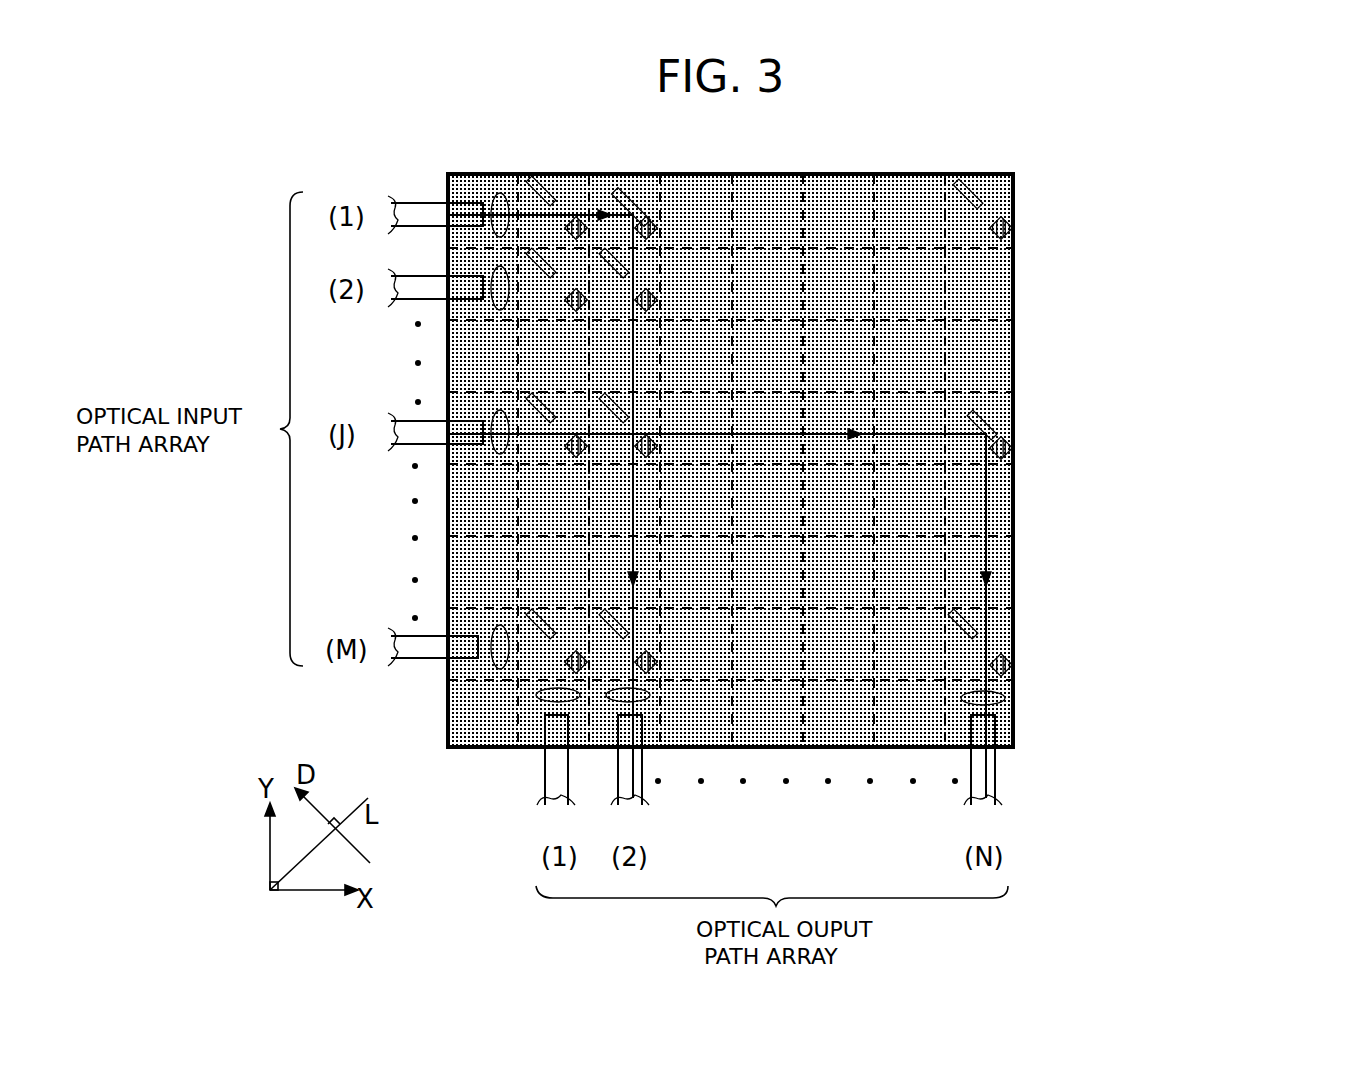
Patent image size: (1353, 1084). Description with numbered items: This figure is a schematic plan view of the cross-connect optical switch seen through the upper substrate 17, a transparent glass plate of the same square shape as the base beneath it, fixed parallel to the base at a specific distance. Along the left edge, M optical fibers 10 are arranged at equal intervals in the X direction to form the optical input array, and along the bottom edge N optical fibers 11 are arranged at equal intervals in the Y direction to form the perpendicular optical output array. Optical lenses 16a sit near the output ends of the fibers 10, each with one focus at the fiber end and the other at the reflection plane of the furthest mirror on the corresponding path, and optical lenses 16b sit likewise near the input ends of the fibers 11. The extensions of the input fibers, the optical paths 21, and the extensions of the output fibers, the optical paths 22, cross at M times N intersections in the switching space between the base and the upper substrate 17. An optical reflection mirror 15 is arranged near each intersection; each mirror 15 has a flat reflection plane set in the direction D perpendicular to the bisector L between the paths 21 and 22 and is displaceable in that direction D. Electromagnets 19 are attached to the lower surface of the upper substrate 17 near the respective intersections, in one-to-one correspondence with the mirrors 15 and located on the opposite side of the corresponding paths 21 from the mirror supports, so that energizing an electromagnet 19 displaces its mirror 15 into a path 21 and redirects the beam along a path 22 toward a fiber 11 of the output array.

The optical fibers 10 is at (400, 196).
The optical fibers 11 is at (537, 784).
The optical reflection mirrors 15 is at (619, 166).
The optical lenses 16a is at (490, 166).
The optical lenses 16b is at (997, 692).
The upper substrate 17 is at (1008, 567).
The electromagnets 19 is at (652, 205).
The optical paths 21 is at (893, 417).
The optical paths 22 is at (626, 495).